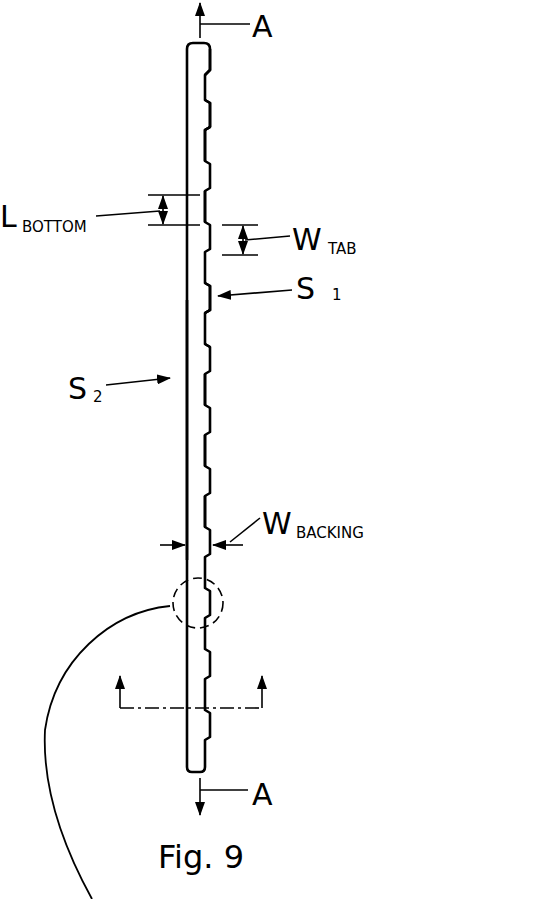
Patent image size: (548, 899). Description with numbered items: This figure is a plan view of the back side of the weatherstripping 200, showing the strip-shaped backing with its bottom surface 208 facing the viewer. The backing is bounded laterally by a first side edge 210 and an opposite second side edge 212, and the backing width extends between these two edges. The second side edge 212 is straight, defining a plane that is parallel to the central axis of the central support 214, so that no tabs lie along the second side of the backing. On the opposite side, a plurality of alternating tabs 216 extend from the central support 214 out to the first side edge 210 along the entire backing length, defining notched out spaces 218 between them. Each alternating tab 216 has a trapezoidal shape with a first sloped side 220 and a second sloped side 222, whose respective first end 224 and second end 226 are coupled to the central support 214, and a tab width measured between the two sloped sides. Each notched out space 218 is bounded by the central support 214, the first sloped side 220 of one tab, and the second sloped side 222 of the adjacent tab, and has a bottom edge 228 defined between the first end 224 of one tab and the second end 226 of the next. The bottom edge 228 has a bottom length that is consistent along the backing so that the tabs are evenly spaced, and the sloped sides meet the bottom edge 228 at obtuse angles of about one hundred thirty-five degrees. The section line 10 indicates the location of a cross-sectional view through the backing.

The weatherstripping 200 is at (156, 61).
The first sloped side 220 is at (206, 106).
The second sloped side 222 is at (207, 131).
The first end 224 is at (208, 104).
The second end 226 is at (209, 128).
The bottom edge 228 is at (205, 208).
The central support 214 is at (200, 299).
The alternating tabs 216 is at (206, 367).
The notched out spaces 218 is at (212, 510).
The bottom surface 208 is at (197, 485).
The second side edge 212 is at (194, 572).
The first side edge 210 is at (222, 600).
The section line 10- 10 is at (193, 674).